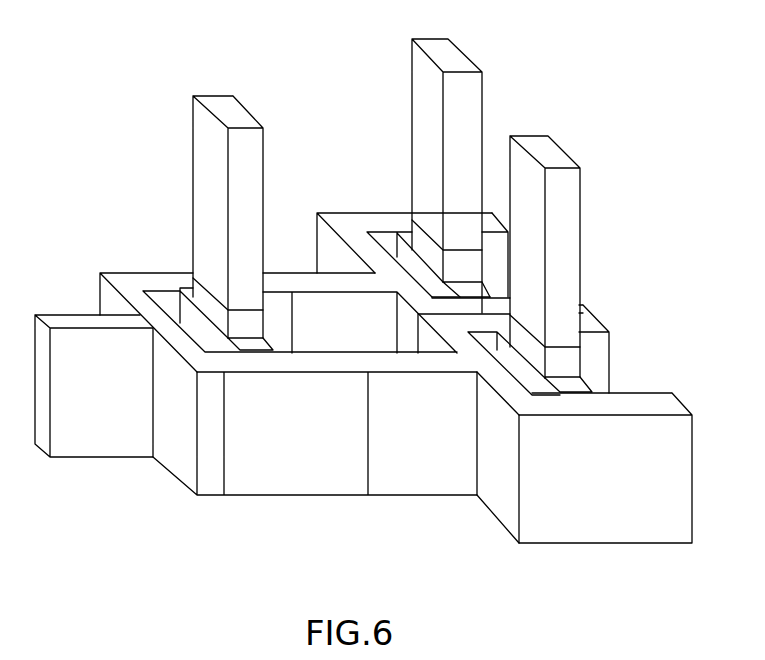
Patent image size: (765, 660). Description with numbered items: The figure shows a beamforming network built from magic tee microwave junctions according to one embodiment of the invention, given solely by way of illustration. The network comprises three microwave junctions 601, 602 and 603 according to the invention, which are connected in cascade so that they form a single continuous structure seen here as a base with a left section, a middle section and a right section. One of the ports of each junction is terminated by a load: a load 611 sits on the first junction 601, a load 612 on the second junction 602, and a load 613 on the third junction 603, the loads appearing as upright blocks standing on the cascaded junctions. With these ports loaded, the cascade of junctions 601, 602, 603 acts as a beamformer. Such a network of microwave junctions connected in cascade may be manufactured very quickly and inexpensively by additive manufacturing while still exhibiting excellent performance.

The microwave junction 601 is at (142, 270).
The microwave junction 602 is at (375, 210).
The microwave junction 603 is at (525, 541).
The load 611 is at (193, 133).
The load 612 is at (482, 108).
The load 613 is at (580, 285).